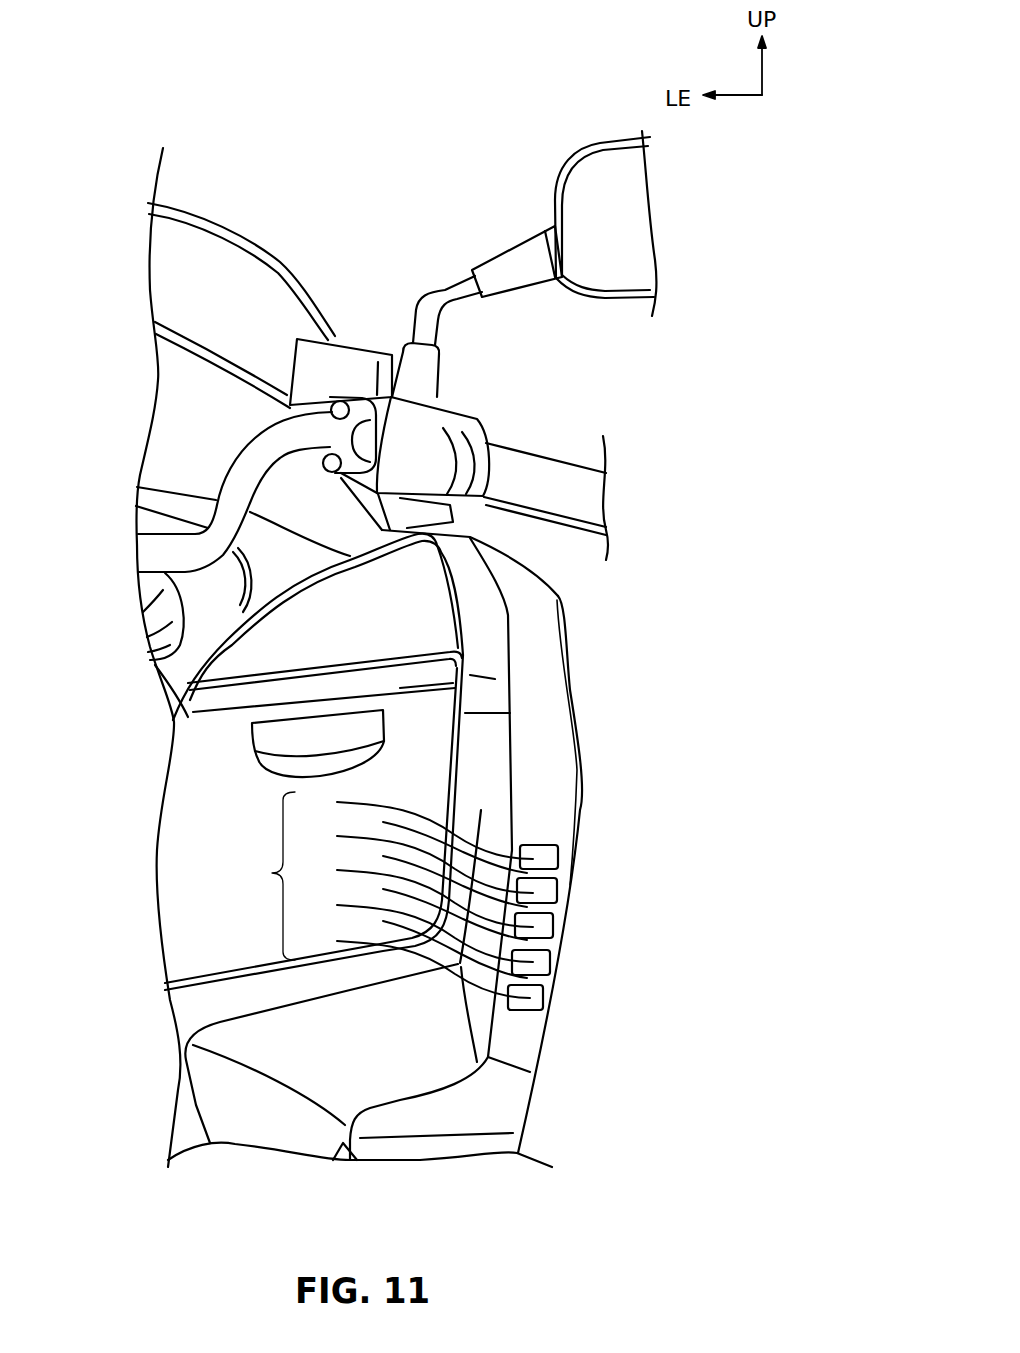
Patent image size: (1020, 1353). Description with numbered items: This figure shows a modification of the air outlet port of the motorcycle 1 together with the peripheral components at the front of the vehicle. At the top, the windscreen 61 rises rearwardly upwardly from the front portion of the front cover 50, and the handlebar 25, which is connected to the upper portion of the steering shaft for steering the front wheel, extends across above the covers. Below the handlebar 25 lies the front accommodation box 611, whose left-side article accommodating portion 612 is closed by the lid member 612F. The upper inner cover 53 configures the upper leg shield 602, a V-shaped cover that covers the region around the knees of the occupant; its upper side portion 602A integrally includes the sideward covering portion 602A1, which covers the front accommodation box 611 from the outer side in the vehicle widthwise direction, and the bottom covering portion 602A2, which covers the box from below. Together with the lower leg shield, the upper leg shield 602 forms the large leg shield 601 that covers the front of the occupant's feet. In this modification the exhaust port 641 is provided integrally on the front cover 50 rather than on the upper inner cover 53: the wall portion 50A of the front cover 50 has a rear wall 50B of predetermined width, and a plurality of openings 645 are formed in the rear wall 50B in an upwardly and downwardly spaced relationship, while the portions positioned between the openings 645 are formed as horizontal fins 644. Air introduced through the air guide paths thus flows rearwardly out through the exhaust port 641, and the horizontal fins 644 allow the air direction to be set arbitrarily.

The motorcycle 1 is at (440, 71).
The windscreen 61 is at (207, 213).
The handlebar 25 is at (268, 447).
The article accommodating portion 612 is at (395, 640).
The front cover 50 is at (574, 618).
The front accommodation box 611 is at (467, 663).
The wall portion 50A is at (573, 682).
The rear wall 50B is at (533, 743).
The sideward covering portion 602A1 is at (488, 785).
The upper inner cover 53 is at (515, 813).
The exhaust port 641 is at (261, 876).
The horizontal fin 644 is at (435, 894).
The opening 645 is at (412, 895).
The upper leg shield 602 is at (532, 1092).
The upper side portion 602A is at (522, 1137).
The leg shield 601 is at (530, 1147).
The bottom covering portion 602A2 is at (387, 1060).
The lid member 612F is at (215, 722).